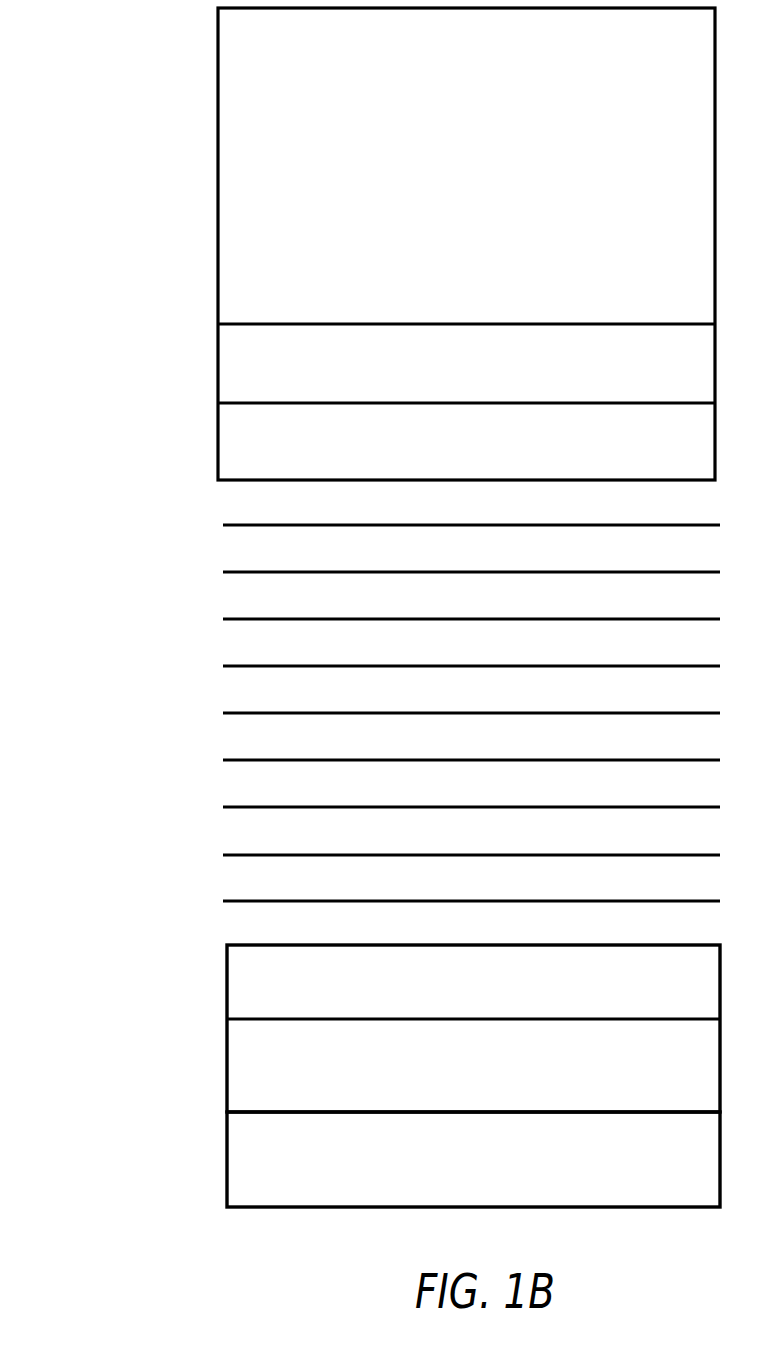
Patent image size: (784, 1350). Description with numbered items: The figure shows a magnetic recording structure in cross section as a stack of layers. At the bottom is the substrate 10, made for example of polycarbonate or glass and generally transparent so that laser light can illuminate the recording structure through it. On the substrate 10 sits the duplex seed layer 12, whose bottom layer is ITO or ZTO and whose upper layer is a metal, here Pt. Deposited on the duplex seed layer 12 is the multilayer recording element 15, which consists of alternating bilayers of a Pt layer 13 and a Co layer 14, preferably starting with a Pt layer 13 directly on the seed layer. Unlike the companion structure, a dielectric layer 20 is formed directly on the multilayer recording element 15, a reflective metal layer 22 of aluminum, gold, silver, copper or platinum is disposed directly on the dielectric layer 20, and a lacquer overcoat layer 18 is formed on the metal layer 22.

The substrate 10 is at (227, 1157).
The duplex seed layer 12 is at (183, 1034).
The Pt layer 13 is at (240, 922).
The Co layer 14 is at (237, 876).
The multilayer recording element 15 is at (147, 714).
The lacquer overcoat layer 18 is at (218, 262).
The dielectric layer 20 is at (218, 442).
The metal layer 22 is at (218, 370).